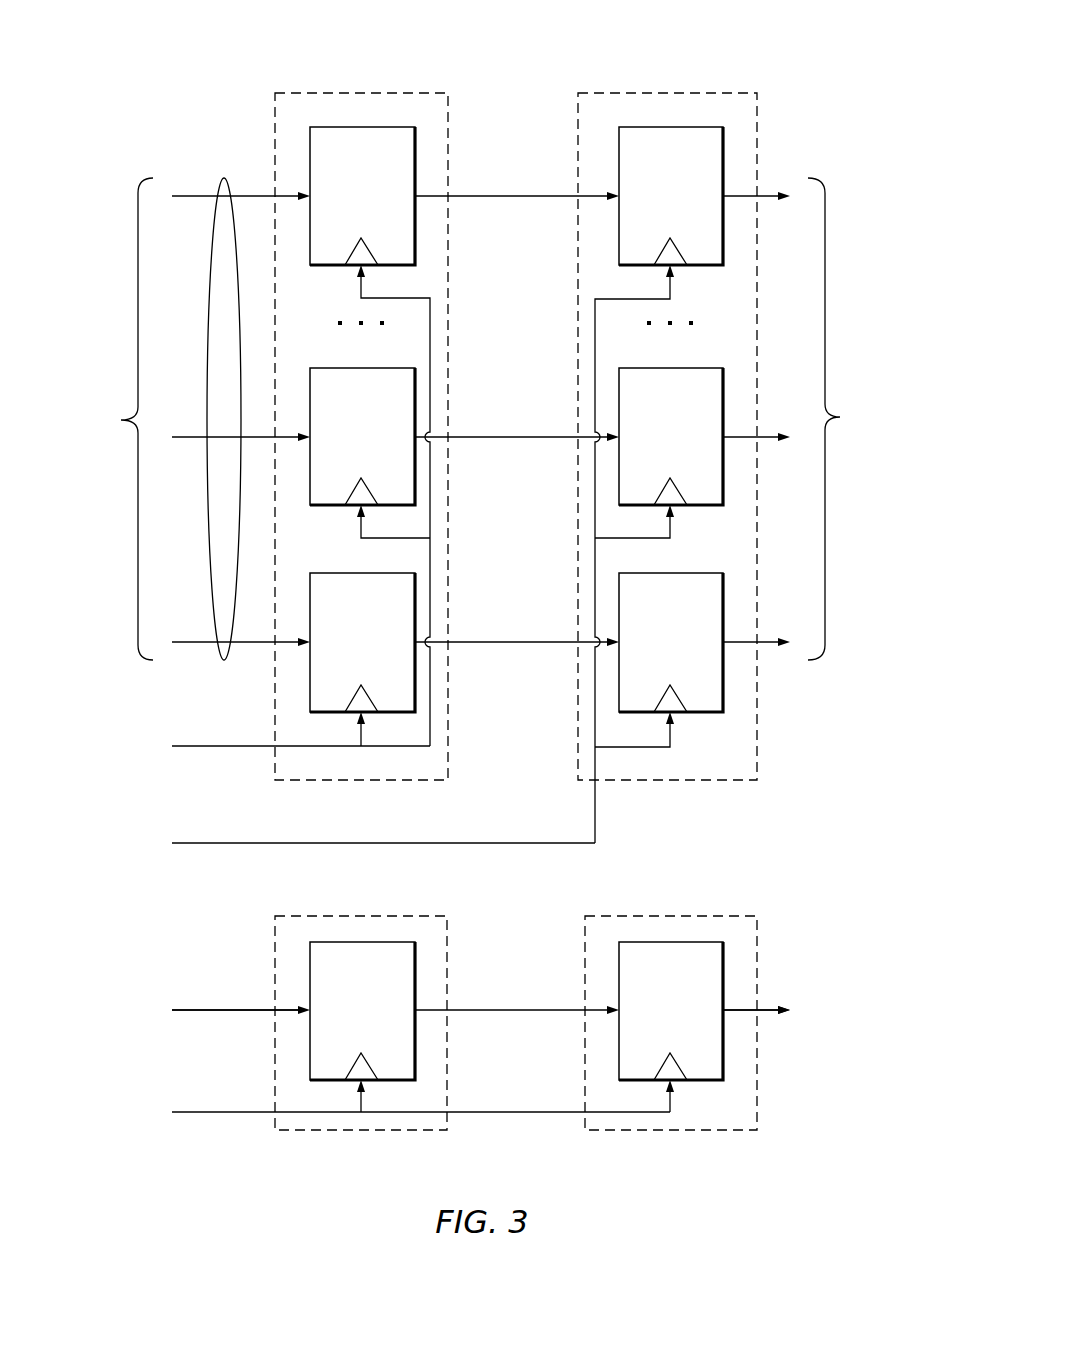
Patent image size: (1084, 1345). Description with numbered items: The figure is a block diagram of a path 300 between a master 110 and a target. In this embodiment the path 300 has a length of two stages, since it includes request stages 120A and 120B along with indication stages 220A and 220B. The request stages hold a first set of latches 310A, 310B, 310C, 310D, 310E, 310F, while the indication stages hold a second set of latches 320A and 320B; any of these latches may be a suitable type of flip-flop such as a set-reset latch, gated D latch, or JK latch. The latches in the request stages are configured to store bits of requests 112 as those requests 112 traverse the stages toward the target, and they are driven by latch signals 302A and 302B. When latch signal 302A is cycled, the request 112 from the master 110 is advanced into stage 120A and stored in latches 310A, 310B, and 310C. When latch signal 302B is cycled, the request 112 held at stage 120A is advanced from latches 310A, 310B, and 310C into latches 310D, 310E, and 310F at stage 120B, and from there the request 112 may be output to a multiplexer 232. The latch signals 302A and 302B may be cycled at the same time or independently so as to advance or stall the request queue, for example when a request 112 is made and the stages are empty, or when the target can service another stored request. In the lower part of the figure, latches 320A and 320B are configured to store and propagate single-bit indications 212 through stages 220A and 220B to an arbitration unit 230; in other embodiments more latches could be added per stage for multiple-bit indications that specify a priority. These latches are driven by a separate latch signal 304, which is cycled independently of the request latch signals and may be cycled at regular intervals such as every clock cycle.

The path 300 is at (810, 78).
The request stage 120A is at (386, 93).
The request stage 120B is at (690, 93).
The request 112 is at (222, 179).
The master 110 is at (99, 419).
The multiplexer 232 is at (854, 419).
The latch 310A is at (336, 206).
The latch 310B is at (336, 447).
The latch 310C is at (336, 652).
The latch 310D is at (645, 206).
The latch 310E is at (645, 447).
The latch 310F is at (645, 652).
The latch signal 302A is at (228, 770).
The latch signal 302B is at (252, 867).
The indication stage 220A is at (378, 1130).
The indication stage 220B is at (690, 1130).
The latch 320A is at (336, 1020).
The latch 320B is at (645, 1020).
The indication 212 is at (232, 1010).
The latch signal 304 is at (236, 1136).
The arbitration unit 230 is at (796, 1009).